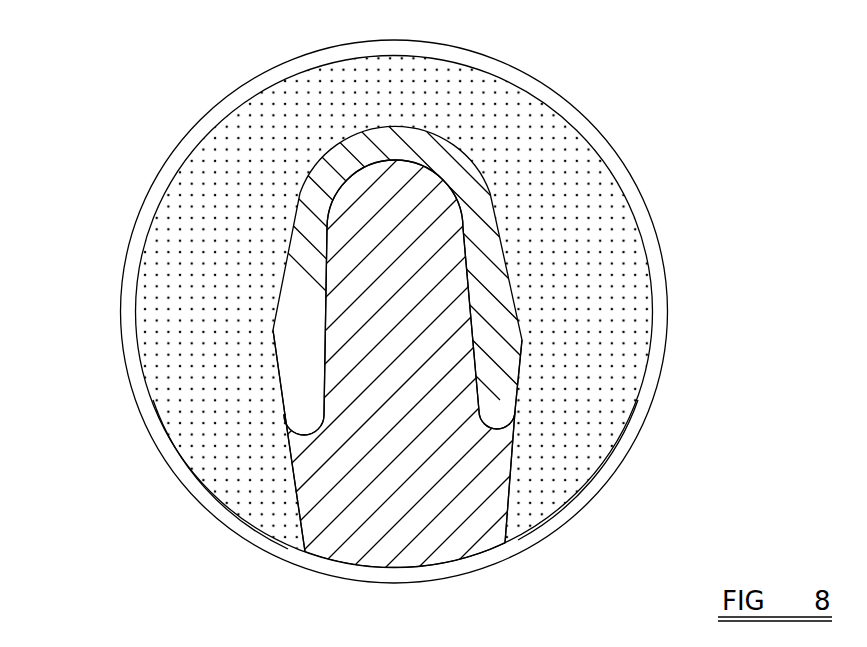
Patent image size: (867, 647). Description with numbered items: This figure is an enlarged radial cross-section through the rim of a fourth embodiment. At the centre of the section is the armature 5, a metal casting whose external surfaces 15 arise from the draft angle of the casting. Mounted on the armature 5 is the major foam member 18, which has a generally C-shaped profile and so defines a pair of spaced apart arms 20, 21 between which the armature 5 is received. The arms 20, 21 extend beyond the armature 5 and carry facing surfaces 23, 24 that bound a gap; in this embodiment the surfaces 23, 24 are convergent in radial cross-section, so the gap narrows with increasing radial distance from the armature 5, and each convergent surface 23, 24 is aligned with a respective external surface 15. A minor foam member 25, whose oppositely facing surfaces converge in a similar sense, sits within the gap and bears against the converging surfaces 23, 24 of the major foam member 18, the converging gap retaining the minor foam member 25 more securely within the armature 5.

The armature 5 is at (465, 165).
The external surface 15 is at (277, 388).
The foam member 18 is at (593, 193).
The arm 20 is at (257, 500).
The arm 21 is at (552, 485).
The surface 23 is at (298, 508).
The surface 24 is at (507, 500).
The minor foam member 25 is at (411, 518).